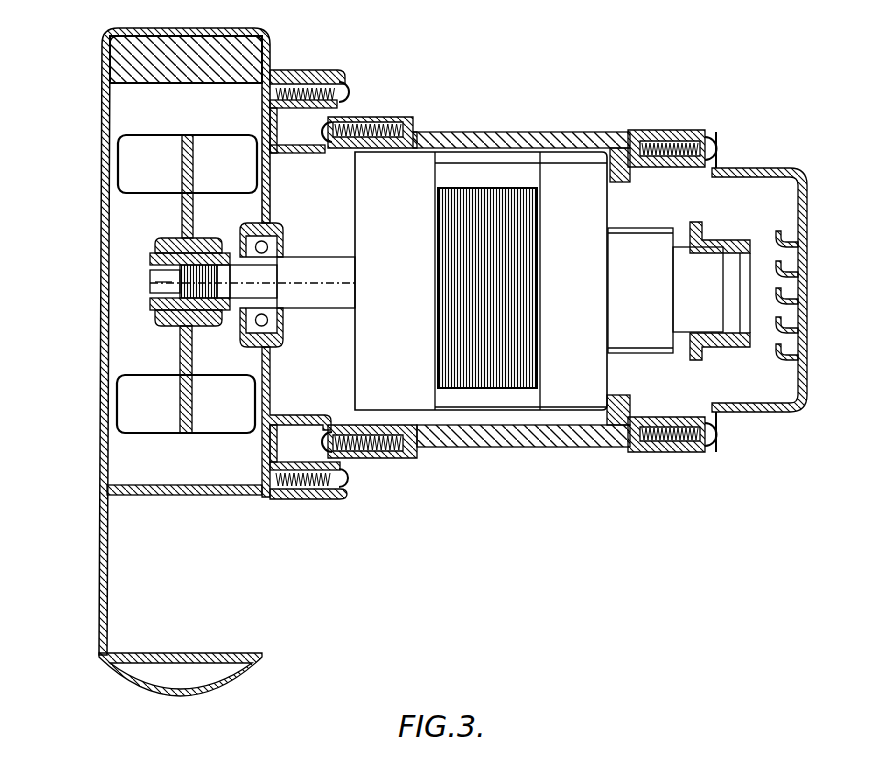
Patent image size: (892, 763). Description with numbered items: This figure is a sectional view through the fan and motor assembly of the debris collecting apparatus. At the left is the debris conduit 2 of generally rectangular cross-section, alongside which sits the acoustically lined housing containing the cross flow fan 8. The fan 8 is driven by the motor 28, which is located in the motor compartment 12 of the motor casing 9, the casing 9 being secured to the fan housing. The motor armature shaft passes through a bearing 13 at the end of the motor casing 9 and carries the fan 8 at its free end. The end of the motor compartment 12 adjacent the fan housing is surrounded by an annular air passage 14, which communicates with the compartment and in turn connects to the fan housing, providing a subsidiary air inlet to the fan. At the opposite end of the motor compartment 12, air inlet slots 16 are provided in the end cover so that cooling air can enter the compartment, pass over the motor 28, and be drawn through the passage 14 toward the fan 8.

The debris conduit 2 is at (230, 618).
The cross flow fan 8 is at (188, 214).
The motor casing 9 is at (497, 437).
The motor compartment 12 is at (687, 388).
The bearing 13 is at (283, 338).
The annular air passage 14 is at (300, 122).
The air inlet slots 16 is at (790, 290).
The motor 28 is at (572, 380).